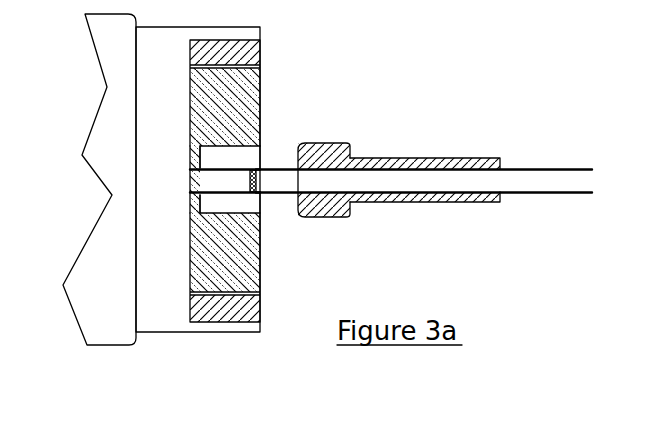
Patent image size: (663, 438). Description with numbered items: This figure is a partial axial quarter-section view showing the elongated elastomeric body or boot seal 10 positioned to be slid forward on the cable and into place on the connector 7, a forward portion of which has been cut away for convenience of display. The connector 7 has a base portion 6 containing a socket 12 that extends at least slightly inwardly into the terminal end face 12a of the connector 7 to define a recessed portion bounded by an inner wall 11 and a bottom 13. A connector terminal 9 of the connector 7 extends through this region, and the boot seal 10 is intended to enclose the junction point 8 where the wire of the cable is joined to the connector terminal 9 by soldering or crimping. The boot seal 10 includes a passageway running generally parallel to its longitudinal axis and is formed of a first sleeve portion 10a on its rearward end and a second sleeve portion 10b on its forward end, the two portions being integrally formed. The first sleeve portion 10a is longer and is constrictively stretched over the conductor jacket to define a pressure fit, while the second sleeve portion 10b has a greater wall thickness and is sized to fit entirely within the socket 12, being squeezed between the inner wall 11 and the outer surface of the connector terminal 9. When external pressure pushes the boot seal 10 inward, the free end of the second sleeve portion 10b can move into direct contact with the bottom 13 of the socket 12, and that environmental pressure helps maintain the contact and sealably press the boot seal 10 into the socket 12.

The base portion 6 is at (223, 98).
The connector 7 is at (108, 357).
The junction point 8 is at (260, 193).
The connector terminal 9 is at (212, 180).
The boot seal 10 is at (387, 107).
The first sleeve portion 10a is at (455, 152).
The second sleeve portion 10b is at (318, 143).
The inner wall 11 is at (226, 204).
The socket 12 is at (227, 155).
The terminal end face 12a is at (255, 268).
The bottom 13 is at (200, 203).